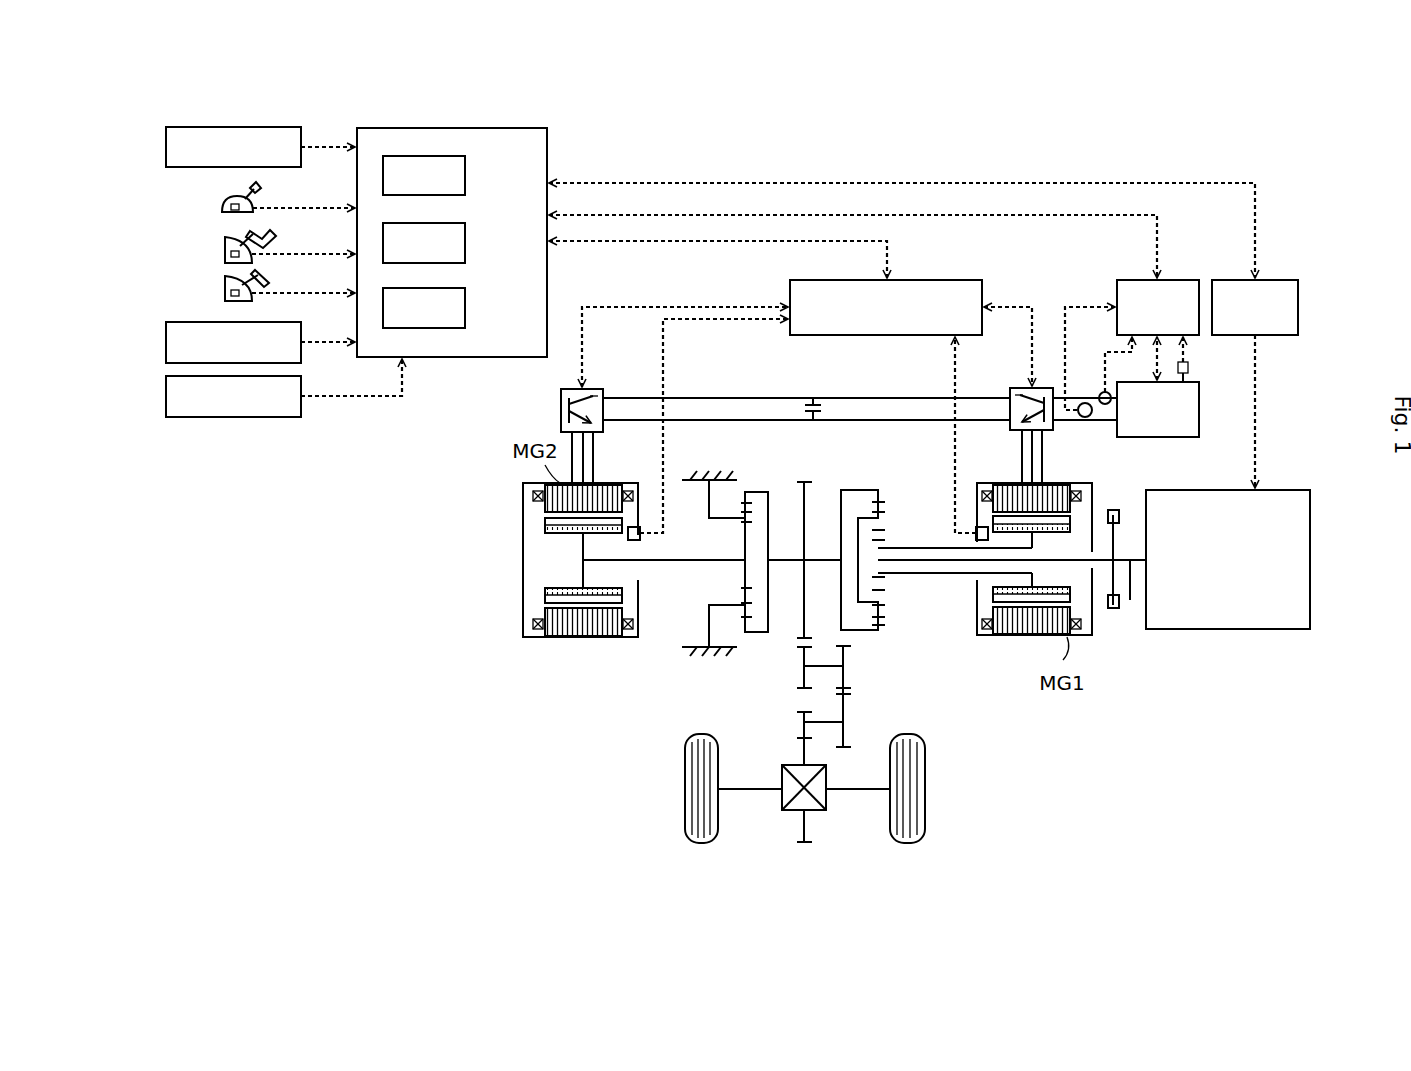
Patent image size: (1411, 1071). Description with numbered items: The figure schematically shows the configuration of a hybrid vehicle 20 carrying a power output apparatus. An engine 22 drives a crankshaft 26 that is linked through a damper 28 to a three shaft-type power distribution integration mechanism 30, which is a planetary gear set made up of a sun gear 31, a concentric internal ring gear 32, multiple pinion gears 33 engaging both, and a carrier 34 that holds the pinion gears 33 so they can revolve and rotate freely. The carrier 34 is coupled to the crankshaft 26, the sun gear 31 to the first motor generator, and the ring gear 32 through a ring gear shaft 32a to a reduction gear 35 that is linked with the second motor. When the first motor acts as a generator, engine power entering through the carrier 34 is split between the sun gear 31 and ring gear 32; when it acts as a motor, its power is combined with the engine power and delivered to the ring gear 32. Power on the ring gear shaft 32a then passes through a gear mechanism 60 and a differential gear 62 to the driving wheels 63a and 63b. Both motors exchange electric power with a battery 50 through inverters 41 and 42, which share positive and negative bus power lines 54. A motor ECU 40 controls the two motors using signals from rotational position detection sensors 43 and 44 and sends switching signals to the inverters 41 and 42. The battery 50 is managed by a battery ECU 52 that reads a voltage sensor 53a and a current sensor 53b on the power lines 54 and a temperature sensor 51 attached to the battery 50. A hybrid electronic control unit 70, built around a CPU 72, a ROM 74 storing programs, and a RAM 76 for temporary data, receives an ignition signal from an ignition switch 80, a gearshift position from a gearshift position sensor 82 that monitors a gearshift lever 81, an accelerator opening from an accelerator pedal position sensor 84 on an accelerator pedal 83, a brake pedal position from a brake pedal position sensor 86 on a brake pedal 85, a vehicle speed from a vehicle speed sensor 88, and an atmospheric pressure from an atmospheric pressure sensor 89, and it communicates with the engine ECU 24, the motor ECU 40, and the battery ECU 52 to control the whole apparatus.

The hybrid vehicle 20 is at (1062, 155).
The engine 22 is at (1312, 546).
The engine ECU 24 is at (1273, 280).
The crankshaft 26 is at (1130, 600).
The damper 28 is at (1127, 612).
The power distribution integration mechanism 30 is at (936, 545).
The sun gear 31 is at (883, 577).
The ring gear 32 is at (883, 622).
The ring gear shaft 32a is at (786, 557).
The pinion gears 33 is at (883, 600).
The carrier 34 is at (853, 524).
The reduction gear 35 is at (749, 469).
The motor ECU 40 is at (928, 280).
The inverter 41 is at (1022, 387).
The inverter 42 is at (596, 388).
The rotational position detection sensor 43 is at (979, 527).
The rotational position detection sensor 44 is at (634, 527).
The battery 50 is at (1155, 437).
The temperature sensor 51 is at (1193, 368).
The battery ECU 52 is at (1120, 280).
The voltage sensor 53a is at (1087, 418).
The current sensor 53b is at (1108, 404).
The power lines 54 is at (868, 418).
The gear mechanism 60 is at (884, 705).
The differential gear 62 is at (828, 803).
The driving wheel 63a is at (680, 822).
The driving wheel 63b is at (930, 822).
The hybrid electronic control unit 70 is at (452, 219).
The CPU 72 is at (466, 178).
The ROM 74 is at (466, 245).
The RAM 76 is at (466, 313).
The ignition switch 80 is at (166, 142).
The gearshift lever 81 is at (248, 190).
The gearshift position sensor 82 is at (230, 207).
The accelerator pedal 83 is at (250, 237).
The accelerator pedal position sensor 84 is at (229, 254).
The brake pedal 85 is at (258, 283).
The brake pedal position sensor 86 is at (229, 293).
The vehicle speed sensor 88 is at (166, 341).
The atmospheric pressure sensor 89 is at (166, 395).